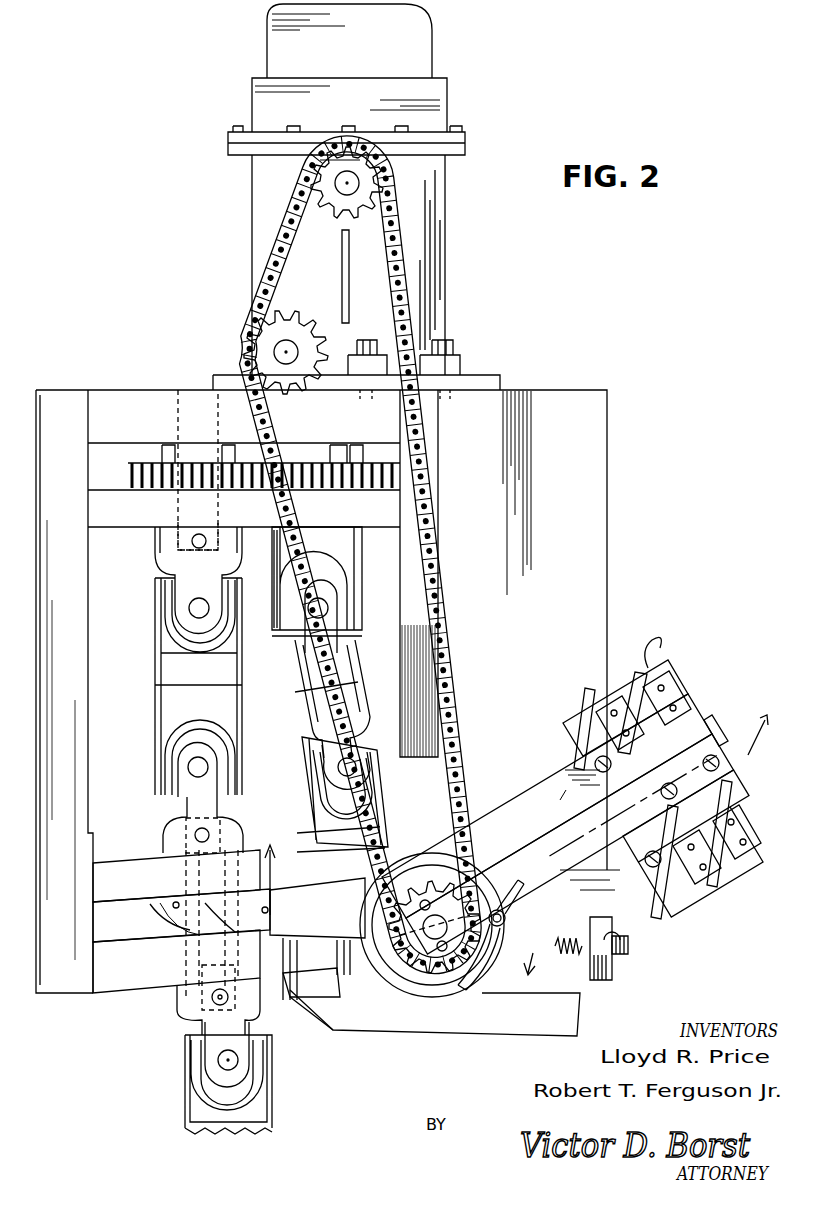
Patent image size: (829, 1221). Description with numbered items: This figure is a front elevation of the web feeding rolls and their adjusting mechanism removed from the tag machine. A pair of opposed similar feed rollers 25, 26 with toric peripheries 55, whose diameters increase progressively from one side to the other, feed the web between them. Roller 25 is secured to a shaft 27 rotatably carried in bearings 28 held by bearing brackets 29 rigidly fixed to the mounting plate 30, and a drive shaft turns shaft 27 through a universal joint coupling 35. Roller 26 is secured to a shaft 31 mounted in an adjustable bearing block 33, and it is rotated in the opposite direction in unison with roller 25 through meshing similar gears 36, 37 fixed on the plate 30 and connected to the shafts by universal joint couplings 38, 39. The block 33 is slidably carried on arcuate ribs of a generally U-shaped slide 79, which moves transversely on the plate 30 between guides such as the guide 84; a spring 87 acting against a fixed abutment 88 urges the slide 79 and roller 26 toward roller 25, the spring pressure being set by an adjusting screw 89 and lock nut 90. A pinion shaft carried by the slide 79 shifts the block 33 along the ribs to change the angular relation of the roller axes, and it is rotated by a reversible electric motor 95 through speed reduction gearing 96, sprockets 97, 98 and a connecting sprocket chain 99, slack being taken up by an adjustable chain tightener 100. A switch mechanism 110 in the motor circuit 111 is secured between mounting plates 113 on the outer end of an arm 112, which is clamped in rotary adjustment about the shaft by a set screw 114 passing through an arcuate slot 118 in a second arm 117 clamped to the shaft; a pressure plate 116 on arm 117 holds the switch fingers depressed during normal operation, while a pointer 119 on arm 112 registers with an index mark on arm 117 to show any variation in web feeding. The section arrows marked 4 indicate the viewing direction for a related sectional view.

The mounting plate 30 is at (598, 552).
The reversible electric motor 95 is at (428, 72).
The speed reduction gearing 96 is at (438, 222).
The sprocket 97 is at (330, 210).
The sprocket 98 is at (432, 925).
The sprocket chain 99 is at (436, 563).
The adjustable chain tightener 100 is at (388, 350).
The gear 36 is at (130, 479).
The gear 37 is at (371, 462).
The universal joint coupling 38 is at (158, 708).
The universal joint coupling 39 is at (362, 662).
The bearings 28 is at (185, 880).
The bearing brackets 29 is at (181, 915).
The toric peripheries 55 is at (295, 918).
The feed roller 25 is at (193, 919).
The feed roller 26 is at (317, 939).
The shaft 27 is at (250, 1008).
The universal joint coupling 35 is at (190, 1020).
The shaft 31 is at (320, 997).
The bearing block 33 is at (370, 975).
The section line 4 is at (514, 815).
The guide 84 is at (525, 1036).
The arcuate slot 118 is at (480, 985).
The set screw 114 is at (505, 915).
The slide 79 is at (544, 953).
The spring 87 is at (572, 956).
The fixed abutment 88 is at (612, 974).
The adjusting screw 89 is at (628, 948).
The lock nut 90 is at (613, 931).
The switch mechanism 110 is at (685, 720).
The circuit 111 is at (652, 660).
The arm 112 is at (543, 780).
The mounting plates 113 is at (685, 890).
The pressure plate 116 is at (690, 730).
The arm 117 is at (543, 838).
The pointer 119 is at (738, 755).